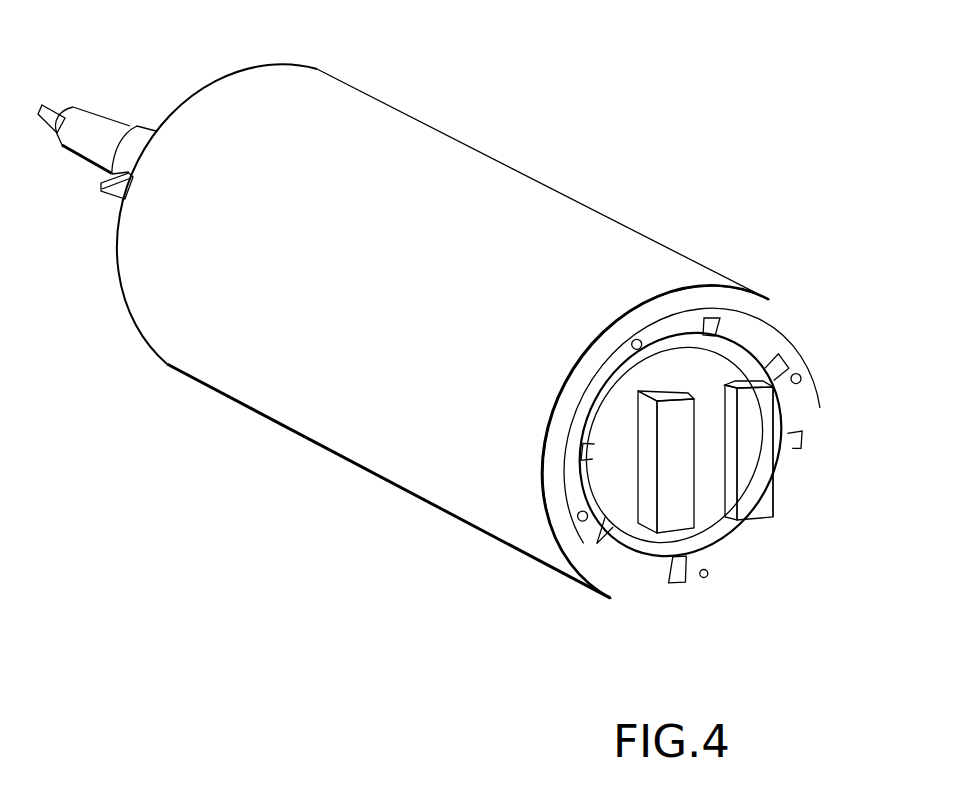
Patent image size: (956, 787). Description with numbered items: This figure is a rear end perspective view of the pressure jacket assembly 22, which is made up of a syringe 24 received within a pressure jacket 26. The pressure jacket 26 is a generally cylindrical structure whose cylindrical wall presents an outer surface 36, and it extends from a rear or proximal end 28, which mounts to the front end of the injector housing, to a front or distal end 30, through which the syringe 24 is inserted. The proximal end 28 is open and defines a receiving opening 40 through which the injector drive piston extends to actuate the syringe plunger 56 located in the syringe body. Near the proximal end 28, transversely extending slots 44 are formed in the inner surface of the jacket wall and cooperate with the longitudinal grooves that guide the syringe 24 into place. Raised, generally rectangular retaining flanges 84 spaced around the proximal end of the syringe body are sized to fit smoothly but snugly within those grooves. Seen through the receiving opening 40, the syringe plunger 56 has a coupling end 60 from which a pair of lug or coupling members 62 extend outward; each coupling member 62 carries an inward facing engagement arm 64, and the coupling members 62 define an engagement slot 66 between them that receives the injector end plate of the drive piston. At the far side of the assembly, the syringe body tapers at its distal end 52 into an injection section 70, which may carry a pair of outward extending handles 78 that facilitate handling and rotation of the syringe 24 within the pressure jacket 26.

The pressure jacket assembly 22 is at (524, 135).
The syringe 24 is at (139, 126).
The pressure jacket 26 is at (407, 105).
The proximal end 28 is at (619, 607).
The distal end 30 is at (160, 380).
The outer surface 36 is at (354, 288).
The receiving opening 40 is at (767, 558).
The slots 44 is at (635, 341).
The distal end 52 is at (86, 85).
The syringe plunger 56 is at (735, 355).
The coupling end 60 is at (738, 555).
The coupling members 62 is at (641, 412).
The engagement arms 64 is at (662, 466).
The engagement slot 66 is at (716, 448).
The injection section 70 is at (82, 182).
The handles 78 is at (117, 196).
The retaining flanges 84 is at (711, 320).